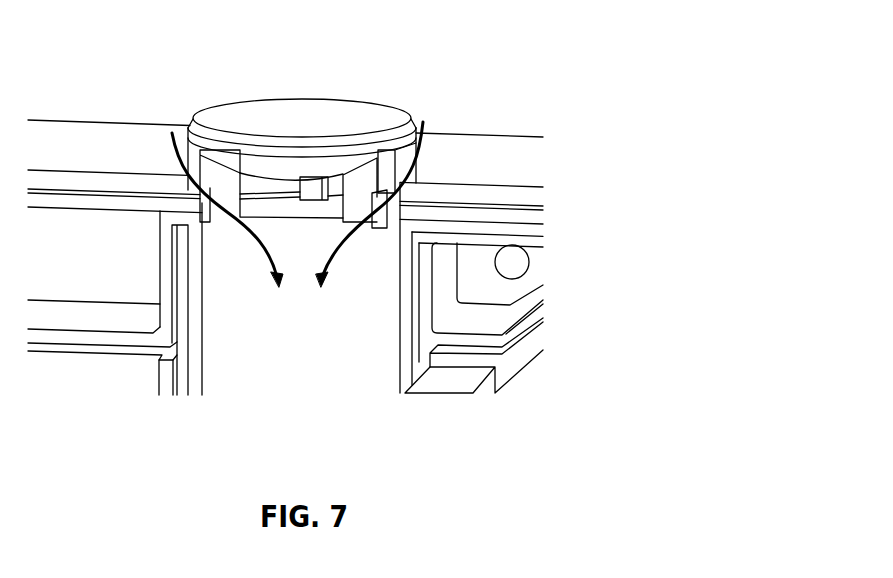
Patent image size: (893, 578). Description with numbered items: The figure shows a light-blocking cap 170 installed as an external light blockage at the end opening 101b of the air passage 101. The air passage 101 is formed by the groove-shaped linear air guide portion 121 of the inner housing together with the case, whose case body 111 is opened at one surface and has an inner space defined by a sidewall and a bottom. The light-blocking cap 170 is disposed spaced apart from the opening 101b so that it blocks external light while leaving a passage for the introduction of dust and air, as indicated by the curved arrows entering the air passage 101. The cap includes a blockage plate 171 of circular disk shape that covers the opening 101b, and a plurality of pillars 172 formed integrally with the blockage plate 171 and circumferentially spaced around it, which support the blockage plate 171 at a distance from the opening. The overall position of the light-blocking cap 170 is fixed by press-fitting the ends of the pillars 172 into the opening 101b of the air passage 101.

The light-blocking cap 170 is at (303, 123).
The blockage plate 171 is at (330, 120).
The pillars 172 is at (212, 167).
The end opening of the air passage 101b is at (275, 195).
The case body 111 is at (482, 142).
The air guide portion 121 is at (195, 383).
The air passage 101 is at (283, 382).